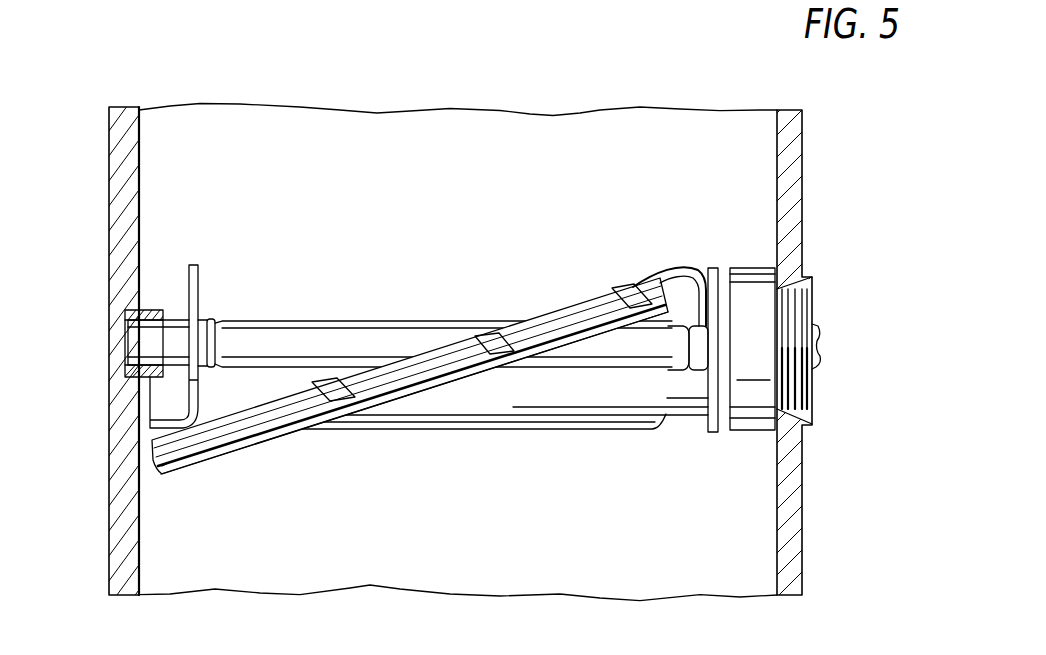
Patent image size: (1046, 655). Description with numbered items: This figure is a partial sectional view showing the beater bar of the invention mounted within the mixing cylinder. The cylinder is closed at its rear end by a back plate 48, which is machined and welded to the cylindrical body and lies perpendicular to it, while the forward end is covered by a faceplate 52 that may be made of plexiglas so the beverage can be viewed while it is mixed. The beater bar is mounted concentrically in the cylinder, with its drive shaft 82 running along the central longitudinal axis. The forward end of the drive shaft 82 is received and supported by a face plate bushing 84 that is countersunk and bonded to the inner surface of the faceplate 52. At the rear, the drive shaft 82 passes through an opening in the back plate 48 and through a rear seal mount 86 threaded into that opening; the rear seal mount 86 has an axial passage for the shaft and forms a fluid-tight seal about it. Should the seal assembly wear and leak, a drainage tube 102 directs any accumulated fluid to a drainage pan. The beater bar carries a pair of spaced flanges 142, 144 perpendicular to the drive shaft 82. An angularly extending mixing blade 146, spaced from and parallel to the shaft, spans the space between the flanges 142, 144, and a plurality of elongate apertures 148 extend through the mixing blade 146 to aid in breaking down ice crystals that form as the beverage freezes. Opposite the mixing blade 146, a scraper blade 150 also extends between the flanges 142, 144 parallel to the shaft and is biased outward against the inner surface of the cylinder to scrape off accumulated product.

The back plate 48 is at (802, 198).
The faceplate 52 is at (114, 233).
The drive shaft 82 is at (816, 330).
The face plate bushing 84 is at (153, 309).
The rear seal mount 86 is at (750, 268).
The drainage tube 102 is at (348, 323).
The flange 142 is at (198, 296).
The flange 144 is at (712, 434).
The mixing blade 146 is at (298, 417).
The elongate aperture 148 is at (492, 356).
The scraper blade 150 is at (598, 417).